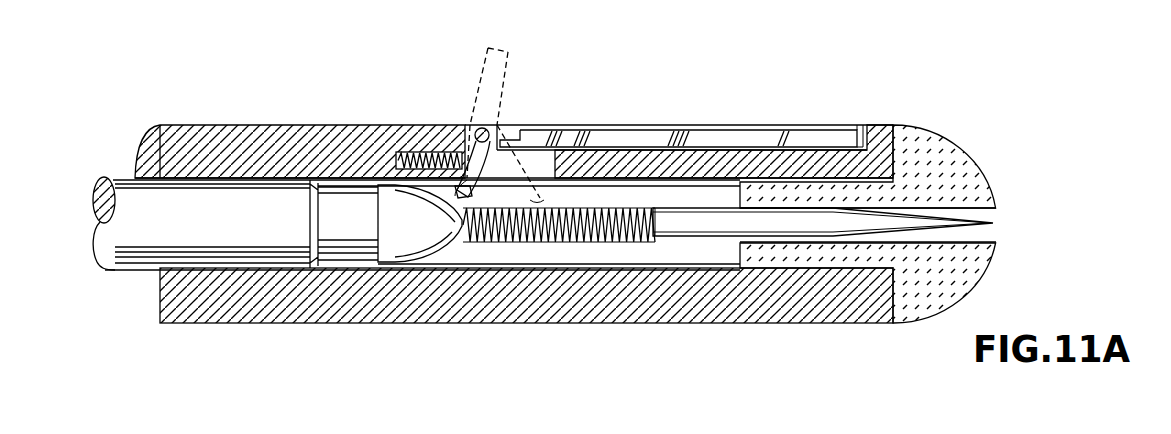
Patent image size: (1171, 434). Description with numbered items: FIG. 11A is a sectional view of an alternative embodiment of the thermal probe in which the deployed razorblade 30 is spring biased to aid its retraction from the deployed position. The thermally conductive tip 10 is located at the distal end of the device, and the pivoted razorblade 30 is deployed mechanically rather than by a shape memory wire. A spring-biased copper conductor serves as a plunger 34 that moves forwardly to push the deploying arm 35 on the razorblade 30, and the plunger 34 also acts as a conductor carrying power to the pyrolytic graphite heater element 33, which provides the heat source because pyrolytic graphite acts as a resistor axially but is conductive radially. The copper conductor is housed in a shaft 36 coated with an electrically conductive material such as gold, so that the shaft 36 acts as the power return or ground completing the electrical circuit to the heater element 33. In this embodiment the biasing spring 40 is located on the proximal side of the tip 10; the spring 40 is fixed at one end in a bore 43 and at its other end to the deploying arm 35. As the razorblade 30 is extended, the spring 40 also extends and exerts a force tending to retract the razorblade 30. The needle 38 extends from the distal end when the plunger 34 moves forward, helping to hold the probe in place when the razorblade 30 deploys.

The thermally conductive tip 10 is at (917, 143).
The pivoted razorblade 30 is at (416, 140).
The pyrolytic graphite heater element 33 is at (340, 220).
The plunger 34 is at (403, 207).
The deploying arm 35 is at (434, 127).
The shaft 36 is at (337, 303).
The needle 38 is at (705, 222).
The biasing spring 40 is at (397, 178).
The bore 43 is at (403, 160).